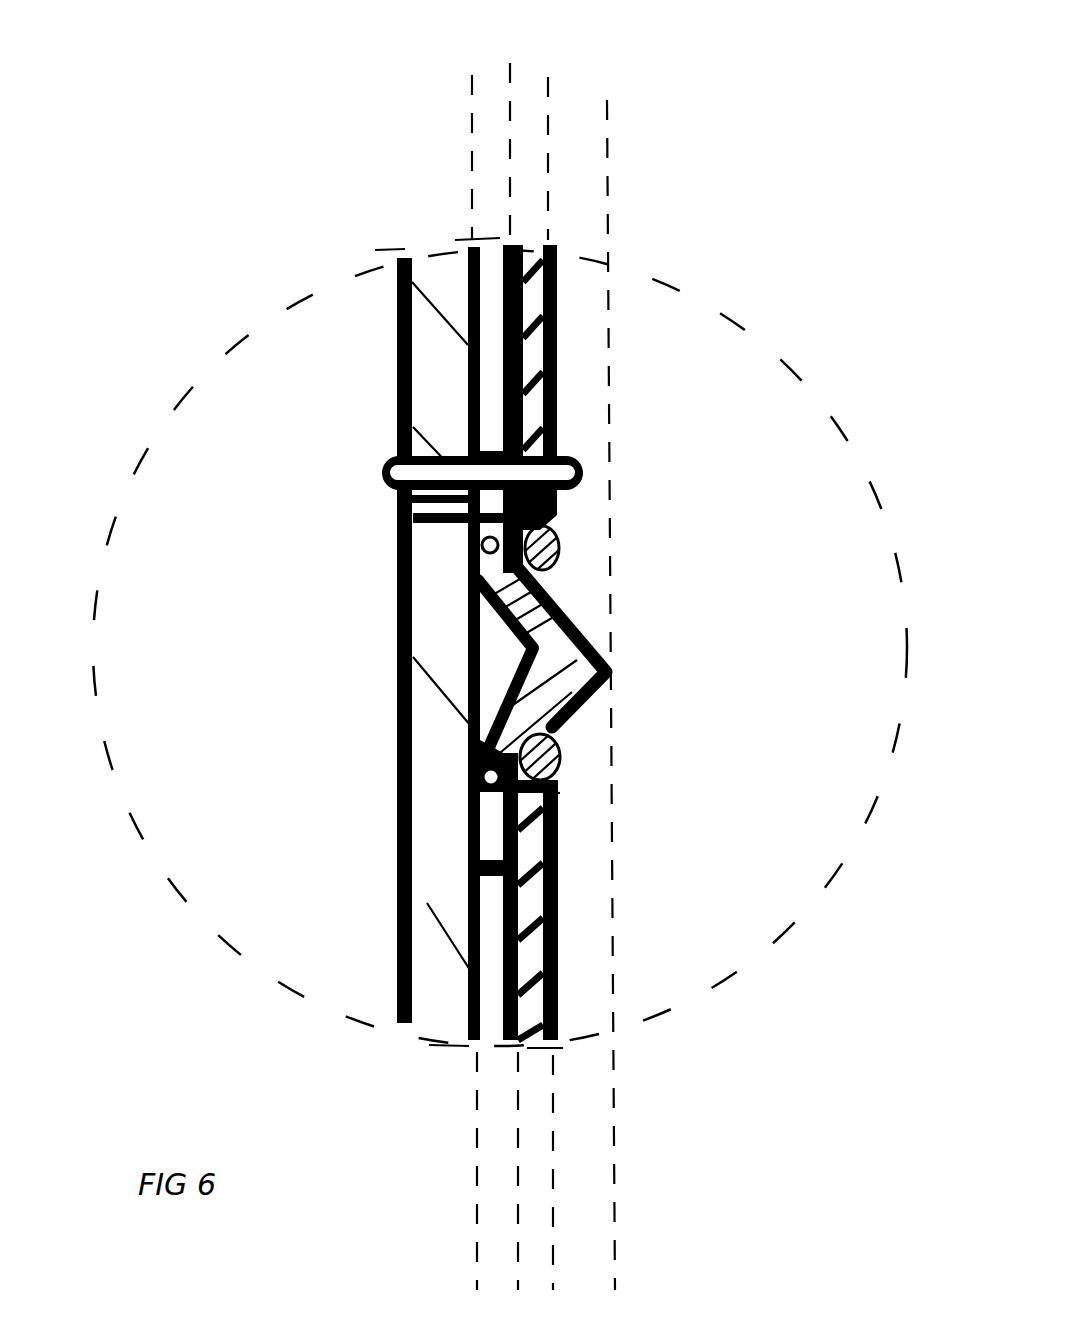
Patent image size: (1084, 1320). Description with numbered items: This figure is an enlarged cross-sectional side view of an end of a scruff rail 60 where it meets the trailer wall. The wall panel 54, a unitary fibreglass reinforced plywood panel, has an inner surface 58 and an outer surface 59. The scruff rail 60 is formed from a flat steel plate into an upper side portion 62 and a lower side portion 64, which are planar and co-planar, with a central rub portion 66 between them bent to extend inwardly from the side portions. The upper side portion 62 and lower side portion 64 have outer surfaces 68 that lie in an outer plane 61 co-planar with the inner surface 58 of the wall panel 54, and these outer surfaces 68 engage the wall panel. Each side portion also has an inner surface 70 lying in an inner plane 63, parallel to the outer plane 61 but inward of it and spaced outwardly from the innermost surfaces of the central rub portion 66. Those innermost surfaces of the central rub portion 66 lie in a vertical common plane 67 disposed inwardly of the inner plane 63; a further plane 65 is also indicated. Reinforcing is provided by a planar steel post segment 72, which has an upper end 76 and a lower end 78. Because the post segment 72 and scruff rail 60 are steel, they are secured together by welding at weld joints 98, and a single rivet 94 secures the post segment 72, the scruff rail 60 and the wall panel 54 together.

The wall panel 54 is at (392, 591).
The inner surface 58 is at (490, 268).
The outer surface 59 is at (398, 265).
The scruff rail 60 is at (654, 598).
The outer plane 61 is at (470, 70).
The upper side portion 62 is at (413, 519).
The inner plane 63 is at (512, 60).
The lower side portion 64 is at (472, 806).
The third reference plane 65 is at (549, 75).
The central rub portion 66 is at (568, 688).
The vertical common plane 67 is at (609, 64).
The outer surfaces 68 is at (482, 546).
The inner surface 70 is at (402, 503).
The post segment 72 is at (560, 337).
The upper end 76 is at (560, 793).
The lower end 78 is at (557, 512).
The rivet 94 is at (385, 462).
The weld joints 98 is at (562, 548).